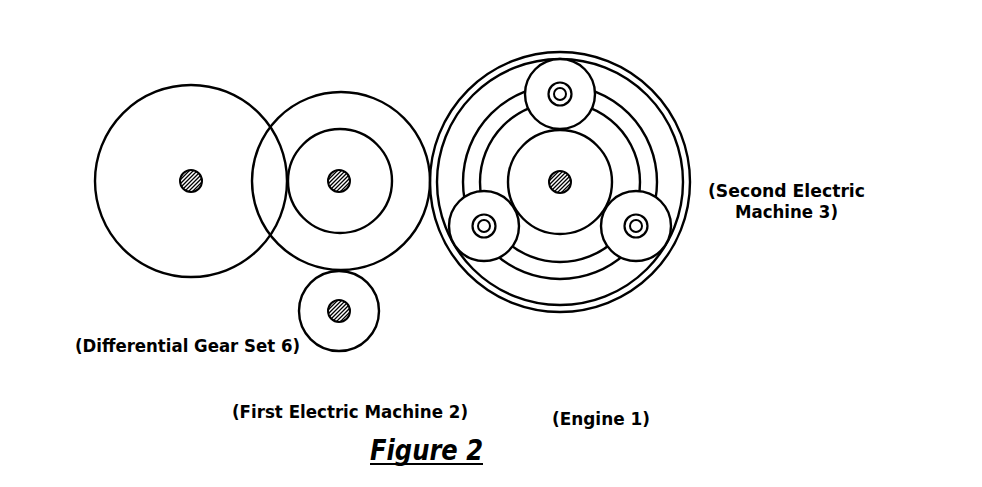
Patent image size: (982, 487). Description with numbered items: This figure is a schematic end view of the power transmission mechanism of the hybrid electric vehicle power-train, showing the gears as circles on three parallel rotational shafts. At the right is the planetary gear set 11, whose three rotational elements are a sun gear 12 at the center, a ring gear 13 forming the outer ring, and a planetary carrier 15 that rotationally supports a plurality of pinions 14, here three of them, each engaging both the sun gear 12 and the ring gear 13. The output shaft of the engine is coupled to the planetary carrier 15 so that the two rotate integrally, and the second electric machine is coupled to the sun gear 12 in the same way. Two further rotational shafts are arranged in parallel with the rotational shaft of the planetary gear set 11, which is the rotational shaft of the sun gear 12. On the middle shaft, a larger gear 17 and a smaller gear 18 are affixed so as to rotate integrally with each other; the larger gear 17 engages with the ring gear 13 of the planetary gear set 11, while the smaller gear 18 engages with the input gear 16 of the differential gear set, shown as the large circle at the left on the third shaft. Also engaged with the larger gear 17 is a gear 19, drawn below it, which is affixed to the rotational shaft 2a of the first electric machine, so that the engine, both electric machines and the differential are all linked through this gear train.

The planetary gear set 11 is at (585, 201).
The sun gear 12 is at (615, 172).
The ring gear 13 is at (670, 107).
The pinions 14 is at (560, 67).
The planetary carrier 15 is at (587, 288).
The input gear 16 is at (193, 277).
The larger gear 17 is at (339, 92).
The smaller gear 18 is at (365, 130).
The gear 19 is at (380, 311).
The rotational shaft of the first electric machine 2a is at (343, 325).